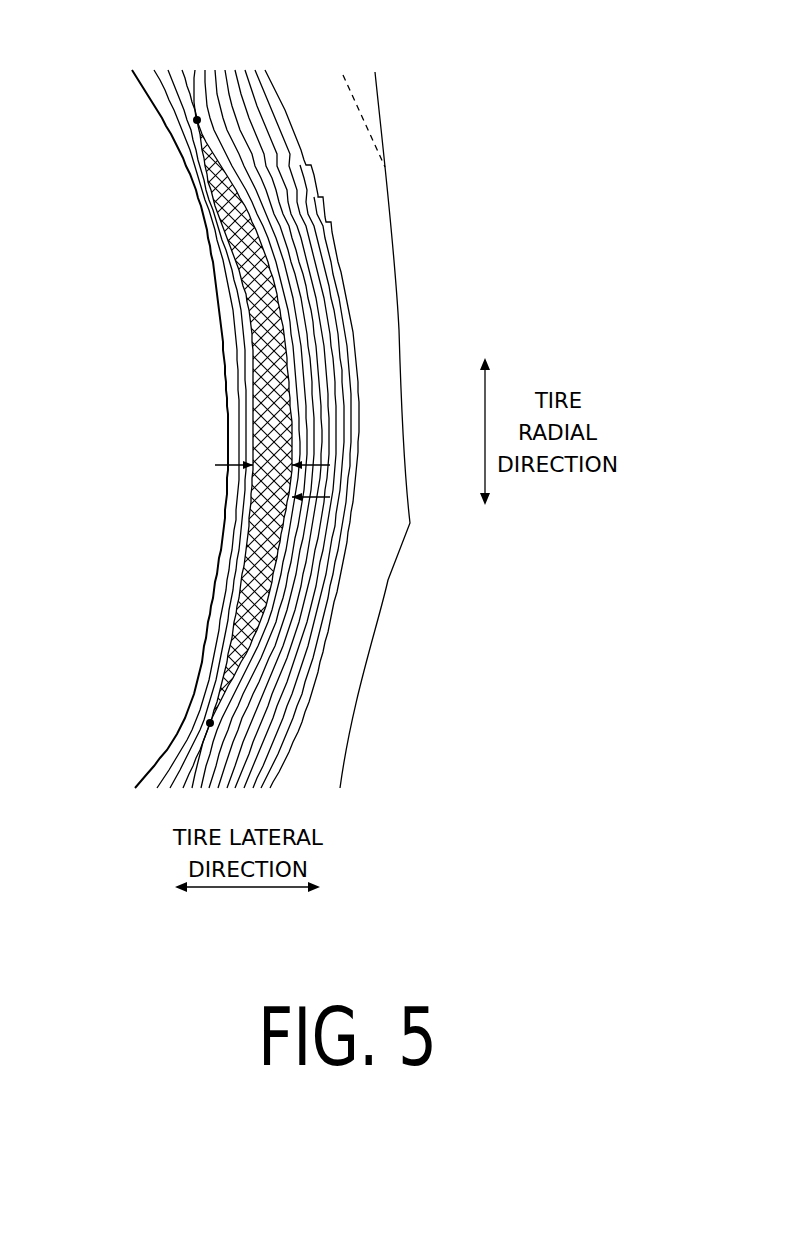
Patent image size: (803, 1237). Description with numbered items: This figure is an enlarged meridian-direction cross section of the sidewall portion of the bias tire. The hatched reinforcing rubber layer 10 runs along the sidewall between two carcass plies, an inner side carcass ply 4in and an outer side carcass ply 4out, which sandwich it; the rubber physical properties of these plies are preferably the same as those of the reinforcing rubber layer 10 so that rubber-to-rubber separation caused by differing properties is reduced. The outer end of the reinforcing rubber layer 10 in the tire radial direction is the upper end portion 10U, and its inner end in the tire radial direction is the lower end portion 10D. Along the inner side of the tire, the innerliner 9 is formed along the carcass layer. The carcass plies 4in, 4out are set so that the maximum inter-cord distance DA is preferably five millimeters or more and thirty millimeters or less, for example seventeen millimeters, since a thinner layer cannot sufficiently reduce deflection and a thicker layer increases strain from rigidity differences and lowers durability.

The inner side carcass ply 4in is at (253, 347).
The outer side carcass ply 4out is at (253, 570).
The innerliner 9 is at (220, 284).
The reinforcing rubber layer 10 is at (238, 235).
The upper end portion 10U is at (197, 121).
The lower end portion 10D is at (210, 723).
The maximum inter-cord distance DA is at (257, 443).